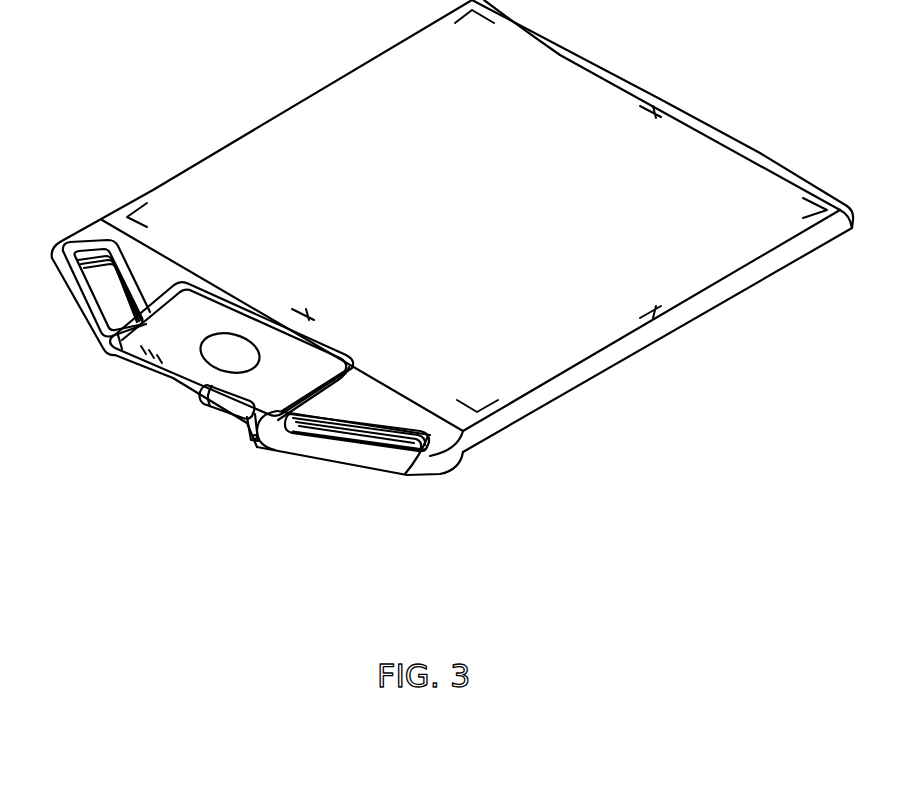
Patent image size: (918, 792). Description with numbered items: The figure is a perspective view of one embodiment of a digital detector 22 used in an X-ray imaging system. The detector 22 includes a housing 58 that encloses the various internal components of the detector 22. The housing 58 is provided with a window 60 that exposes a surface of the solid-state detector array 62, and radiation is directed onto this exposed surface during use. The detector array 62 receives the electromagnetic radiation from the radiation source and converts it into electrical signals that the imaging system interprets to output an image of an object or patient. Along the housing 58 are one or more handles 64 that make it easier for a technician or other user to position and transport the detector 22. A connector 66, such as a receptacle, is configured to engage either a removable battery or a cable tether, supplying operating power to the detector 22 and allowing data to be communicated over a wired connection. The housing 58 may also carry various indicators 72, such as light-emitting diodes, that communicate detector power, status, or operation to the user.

The digital detector 22 is at (159, 98).
The housing 58 is at (148, 265).
The window 60 is at (447, 390).
The solid-state detector array 62 is at (703, 272).
The handles 64 is at (77, 299).
The connector 66 is at (230, 406).
The indicators 72 is at (152, 360).